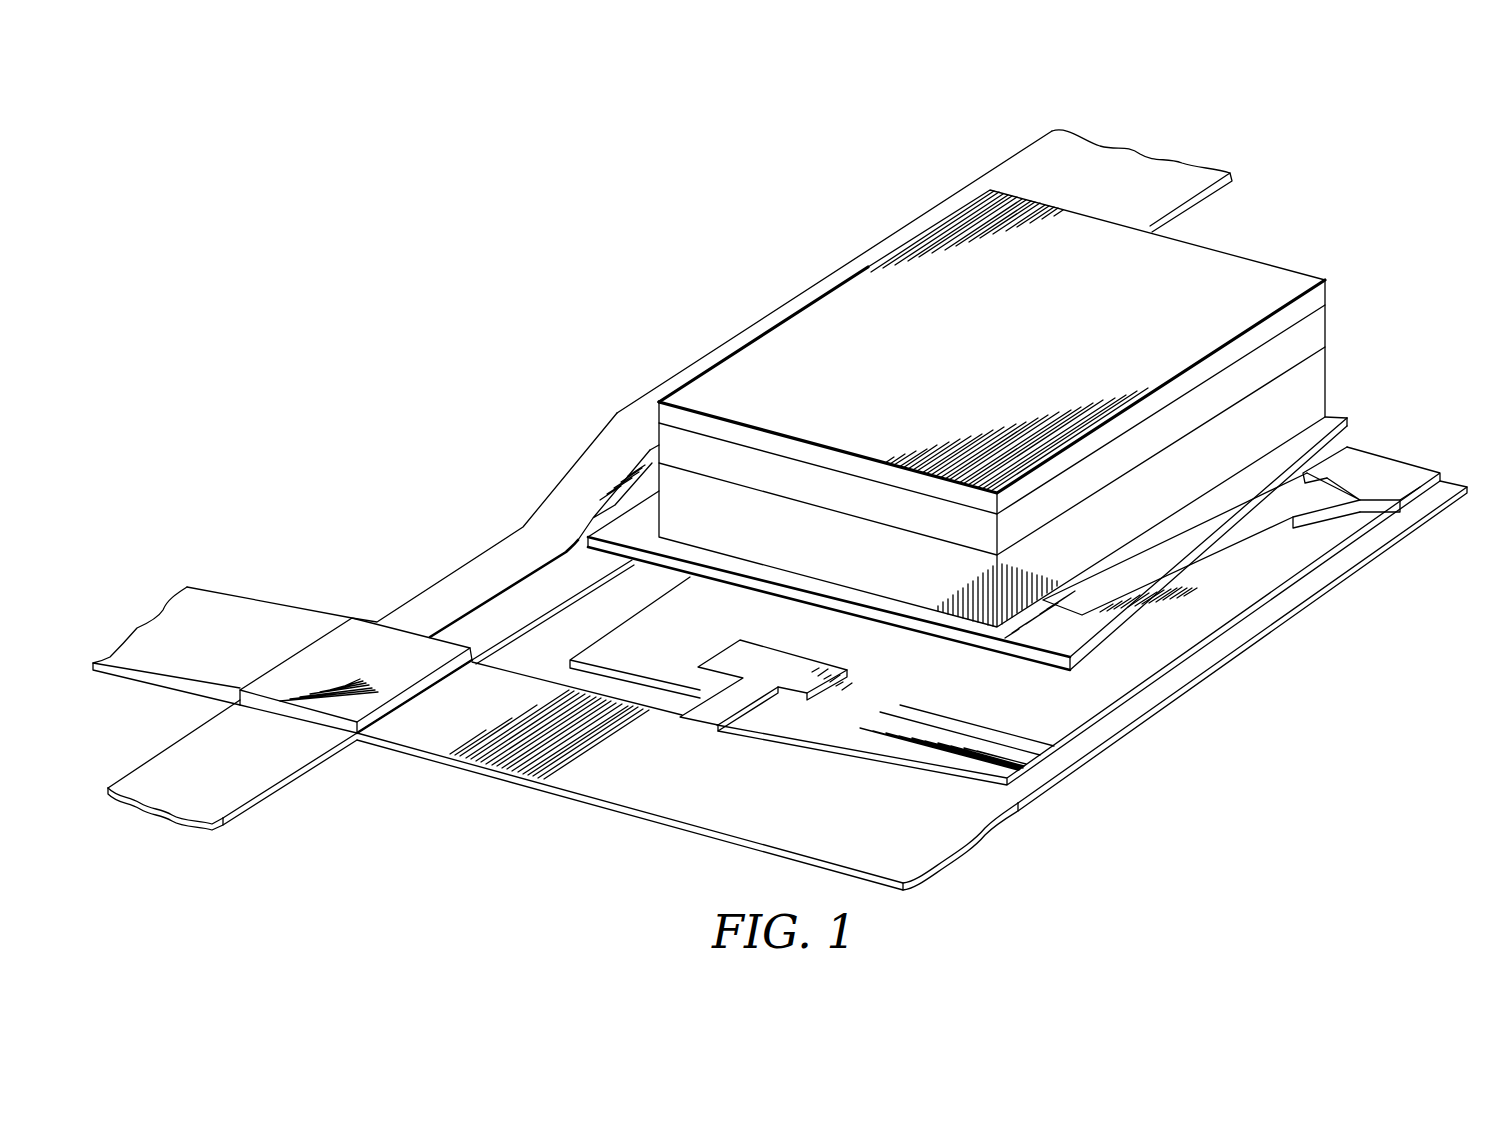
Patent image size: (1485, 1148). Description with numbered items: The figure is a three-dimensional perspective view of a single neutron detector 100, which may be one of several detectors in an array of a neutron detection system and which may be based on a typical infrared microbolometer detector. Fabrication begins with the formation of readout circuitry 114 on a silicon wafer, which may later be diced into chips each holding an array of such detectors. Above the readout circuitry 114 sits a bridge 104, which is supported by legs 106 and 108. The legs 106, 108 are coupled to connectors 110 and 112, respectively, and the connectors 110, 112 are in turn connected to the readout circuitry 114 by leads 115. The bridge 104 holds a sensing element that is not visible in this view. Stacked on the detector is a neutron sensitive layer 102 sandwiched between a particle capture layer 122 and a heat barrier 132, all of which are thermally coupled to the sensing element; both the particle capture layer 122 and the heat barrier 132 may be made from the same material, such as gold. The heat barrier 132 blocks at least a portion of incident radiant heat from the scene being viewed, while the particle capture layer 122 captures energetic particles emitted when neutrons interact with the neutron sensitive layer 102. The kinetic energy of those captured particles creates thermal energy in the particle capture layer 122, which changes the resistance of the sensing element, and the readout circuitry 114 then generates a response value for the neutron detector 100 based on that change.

The neutron detector 100 is at (778, 134).
The neutron sensitive layer 102 is at (1033, 408).
The bridge 104 is at (1003, 655).
The leg 106 is at (1195, 572).
The leg 108 is at (583, 478).
The connector 110 is at (1403, 470).
The connector 112 is at (350, 628).
The readout circuitry 114 is at (1228, 630).
The leads 115 is at (960, 830).
The particle capture layer 122 is at (1313, 387).
The heat barrier 132 is at (1300, 287).